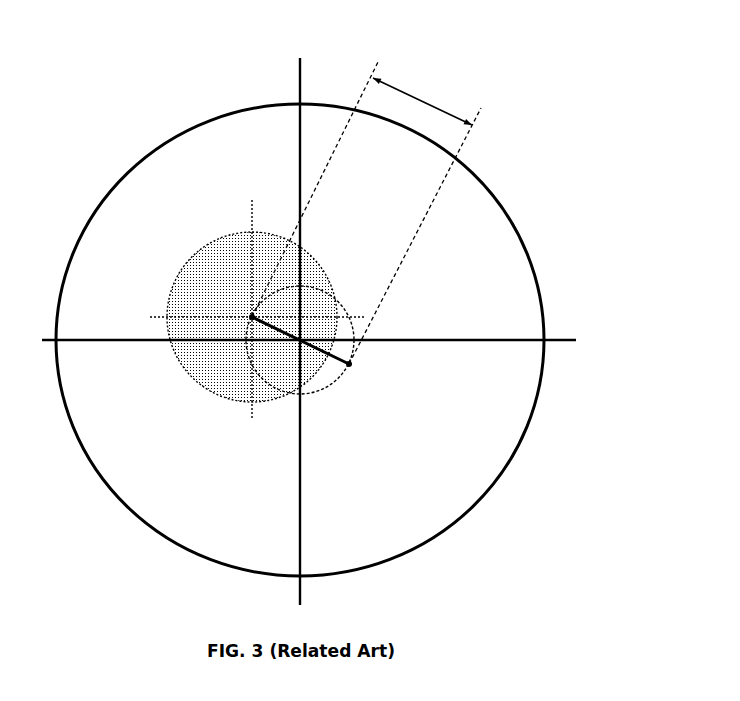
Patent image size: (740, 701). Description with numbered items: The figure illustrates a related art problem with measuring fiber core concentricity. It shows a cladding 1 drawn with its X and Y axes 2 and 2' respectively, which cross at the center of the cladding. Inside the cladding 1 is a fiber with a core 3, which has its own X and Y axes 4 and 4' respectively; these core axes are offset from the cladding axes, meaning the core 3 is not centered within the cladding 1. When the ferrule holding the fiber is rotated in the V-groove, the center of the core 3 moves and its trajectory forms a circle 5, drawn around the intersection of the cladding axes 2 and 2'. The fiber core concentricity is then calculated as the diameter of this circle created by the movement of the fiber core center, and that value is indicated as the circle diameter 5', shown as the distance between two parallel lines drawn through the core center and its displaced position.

The cladding 1 is at (485, 182).
The X axis of the cladding 2 is at (309, 430).
The Y axis of the cladding 2' is at (376, 339).
The core 3 is at (192, 255).
The X axis of the core 4 is at (195, 402).
The Y axis of the core 4' is at (163, 373).
The circle 5 is at (367, 429).
The circle diameter 5' is at (367, 186).